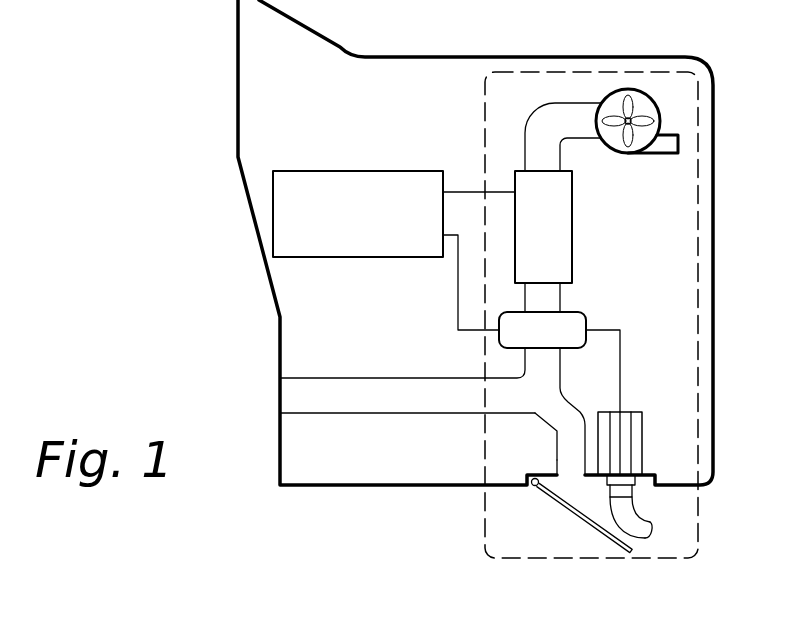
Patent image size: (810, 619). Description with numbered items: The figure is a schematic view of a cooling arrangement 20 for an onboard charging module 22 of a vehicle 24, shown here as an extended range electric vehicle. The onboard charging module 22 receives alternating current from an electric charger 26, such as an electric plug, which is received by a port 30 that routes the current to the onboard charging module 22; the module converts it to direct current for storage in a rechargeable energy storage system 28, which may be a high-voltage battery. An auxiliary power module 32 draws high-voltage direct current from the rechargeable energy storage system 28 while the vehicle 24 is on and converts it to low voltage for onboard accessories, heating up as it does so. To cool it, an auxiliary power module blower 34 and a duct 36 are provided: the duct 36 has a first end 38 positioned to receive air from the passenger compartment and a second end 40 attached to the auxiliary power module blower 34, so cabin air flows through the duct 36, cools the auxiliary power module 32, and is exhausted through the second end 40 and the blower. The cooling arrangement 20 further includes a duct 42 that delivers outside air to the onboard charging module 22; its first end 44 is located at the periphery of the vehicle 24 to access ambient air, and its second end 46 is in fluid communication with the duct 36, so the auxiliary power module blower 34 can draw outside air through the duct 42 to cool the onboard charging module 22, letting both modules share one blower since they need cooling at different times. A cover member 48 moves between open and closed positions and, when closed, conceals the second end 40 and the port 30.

The cooling arrangement 20 is at (485, 113).
The onboard charging module 22 is at (587, 313).
The vehicle 24 is at (716, 160).
The electric charger 26 is at (642, 518).
The rechargeable energy storage system 28 is at (338, 170).
The port 30 is at (643, 428).
The auxiliary power module 32 is at (573, 232).
The auxiliary power module blower 34 is at (627, 155).
The duct 36 is at (360, 378).
The first end 38 is at (287, 396).
The second end 40 is at (601, 105).
The duct 42 is at (572, 408).
The first end 44 is at (557, 470).
The second end 46 is at (535, 414).
The cover member 48 is at (556, 505).